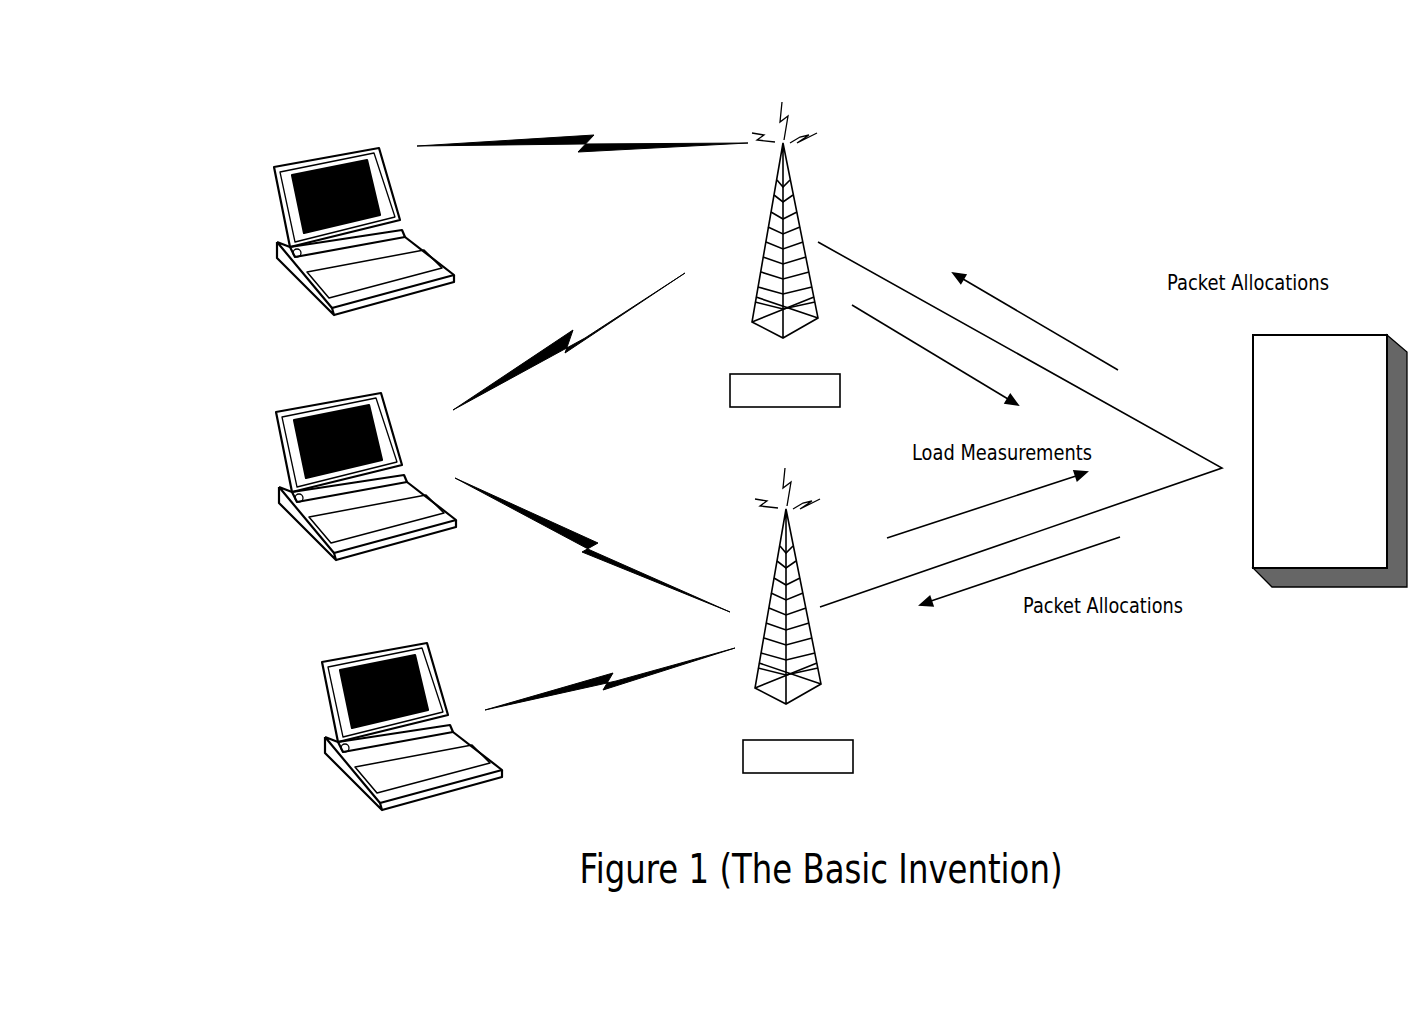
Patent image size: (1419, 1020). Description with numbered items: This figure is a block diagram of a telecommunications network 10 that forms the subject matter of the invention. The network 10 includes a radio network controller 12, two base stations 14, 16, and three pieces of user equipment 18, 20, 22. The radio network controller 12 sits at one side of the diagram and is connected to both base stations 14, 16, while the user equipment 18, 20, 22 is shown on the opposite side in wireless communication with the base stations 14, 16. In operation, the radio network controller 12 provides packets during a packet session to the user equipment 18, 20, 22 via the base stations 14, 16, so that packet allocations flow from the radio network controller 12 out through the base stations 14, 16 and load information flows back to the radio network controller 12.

The telecommunications network 10 is at (424, 121).
The radio network controller 12 is at (1330, 461).
The base station 14 is at (840, 390).
The base station 16 is at (853, 757).
The user equipment 18 is at (272, 230).
The user equipment 20 is at (273, 483).
The user equipment 22 is at (322, 727).